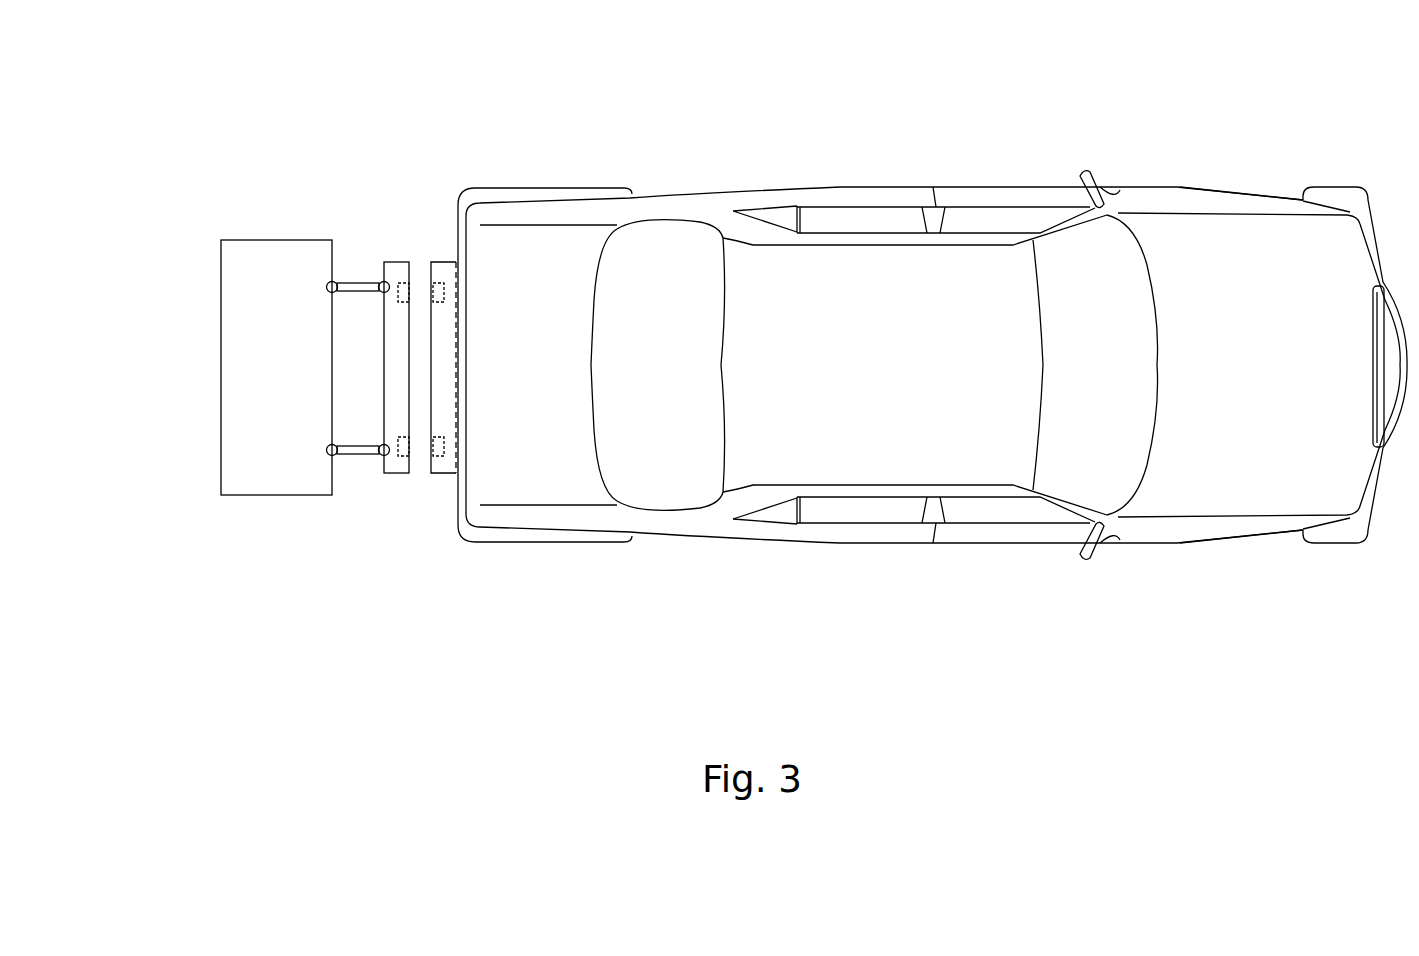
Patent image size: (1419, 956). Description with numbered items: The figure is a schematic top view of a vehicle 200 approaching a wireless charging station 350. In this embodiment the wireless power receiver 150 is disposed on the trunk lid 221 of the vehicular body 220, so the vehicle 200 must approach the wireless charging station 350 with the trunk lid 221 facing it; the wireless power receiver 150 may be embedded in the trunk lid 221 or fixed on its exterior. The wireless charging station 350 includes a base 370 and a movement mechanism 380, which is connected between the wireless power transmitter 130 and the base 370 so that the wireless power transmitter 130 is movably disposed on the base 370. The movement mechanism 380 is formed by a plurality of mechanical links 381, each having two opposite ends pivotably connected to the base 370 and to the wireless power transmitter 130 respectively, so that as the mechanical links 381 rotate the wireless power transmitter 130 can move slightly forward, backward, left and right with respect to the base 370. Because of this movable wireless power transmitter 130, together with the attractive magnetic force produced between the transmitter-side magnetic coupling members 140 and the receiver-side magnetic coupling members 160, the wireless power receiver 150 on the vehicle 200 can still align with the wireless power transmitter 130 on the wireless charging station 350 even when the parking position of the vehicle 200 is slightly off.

The wireless power transmitter 130 is at (397, 466).
The transmitter-side magnetic coupling members 140 is at (406, 282).
The wireless power receiver 150 is at (442, 470).
The receiver-side magnetic coupling members 160 is at (440, 282).
The vehicle 200 is at (937, 148).
The vehicular body 220 is at (1205, 210).
The trunk lid 221 is at (534, 244).
The wireless charging station 350 is at (203, 373).
The base 370 is at (243, 417).
The movement mechanism 380 is at (356, 257).
The mechanical links 381 is at (353, 287).